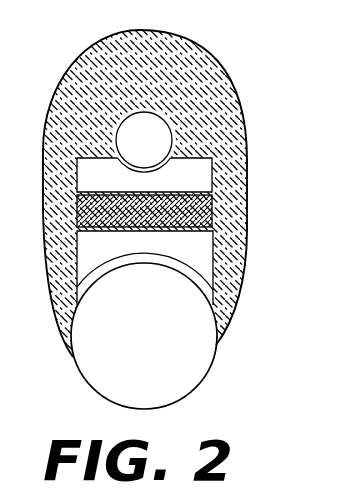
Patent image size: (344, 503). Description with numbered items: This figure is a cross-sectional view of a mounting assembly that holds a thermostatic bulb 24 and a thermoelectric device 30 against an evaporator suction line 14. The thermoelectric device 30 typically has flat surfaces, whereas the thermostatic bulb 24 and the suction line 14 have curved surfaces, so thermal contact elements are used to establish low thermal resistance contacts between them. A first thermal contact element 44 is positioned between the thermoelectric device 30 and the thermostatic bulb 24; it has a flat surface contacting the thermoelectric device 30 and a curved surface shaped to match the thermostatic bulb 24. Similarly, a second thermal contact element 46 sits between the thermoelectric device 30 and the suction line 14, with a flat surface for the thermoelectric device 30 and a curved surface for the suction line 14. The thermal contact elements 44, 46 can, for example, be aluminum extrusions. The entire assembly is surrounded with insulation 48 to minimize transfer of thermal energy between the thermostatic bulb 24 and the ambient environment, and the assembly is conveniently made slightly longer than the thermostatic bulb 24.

The suction line 14 is at (153, 343).
The thermostatic bulb 24 is at (153, 148).
The thermoelectric device 30 is at (198, 217).
The first thermal contact element 44 is at (192, 182).
The second thermal contact element 46 is at (195, 255).
The insulation 48 is at (213, 88).